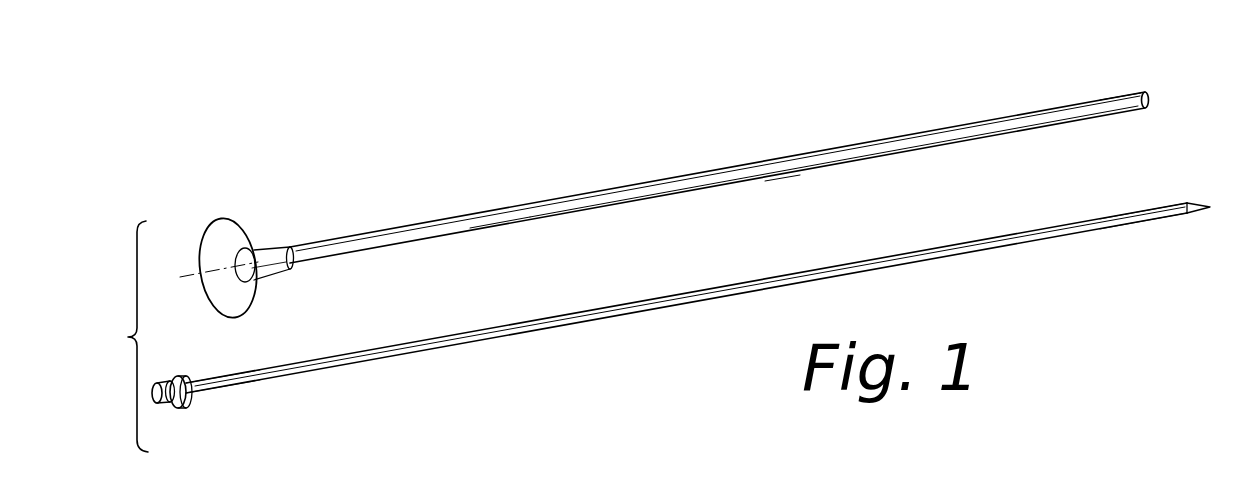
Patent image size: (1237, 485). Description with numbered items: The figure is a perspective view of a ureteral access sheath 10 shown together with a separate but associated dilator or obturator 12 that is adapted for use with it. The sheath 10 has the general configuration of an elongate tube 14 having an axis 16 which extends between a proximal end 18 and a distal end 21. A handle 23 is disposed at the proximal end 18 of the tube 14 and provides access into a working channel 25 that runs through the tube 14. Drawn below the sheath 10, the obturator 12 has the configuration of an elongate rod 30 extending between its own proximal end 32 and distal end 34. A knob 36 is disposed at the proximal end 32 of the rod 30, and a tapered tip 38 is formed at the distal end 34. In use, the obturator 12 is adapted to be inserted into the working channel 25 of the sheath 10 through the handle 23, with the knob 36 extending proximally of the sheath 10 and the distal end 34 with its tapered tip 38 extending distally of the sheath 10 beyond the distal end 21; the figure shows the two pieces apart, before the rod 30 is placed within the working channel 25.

The ureteral access sheath 10 is at (596, 146).
The obturator 12 is at (480, 362).
The elongate tube 14 is at (391, 228).
The axis 16 is at (495, 218).
The proximal end 18 is at (282, 162).
The distal end 21 is at (1030, 95).
The handle 23 is at (264, 230).
The working channel 25 is at (776, 172).
The elongate rod 30 is at (665, 310).
The proximal end 32 is at (256, 356).
The distal end 34 is at (1170, 242).
The knob 36 is at (178, 410).
The tapered tip 38 is at (1210, 202).